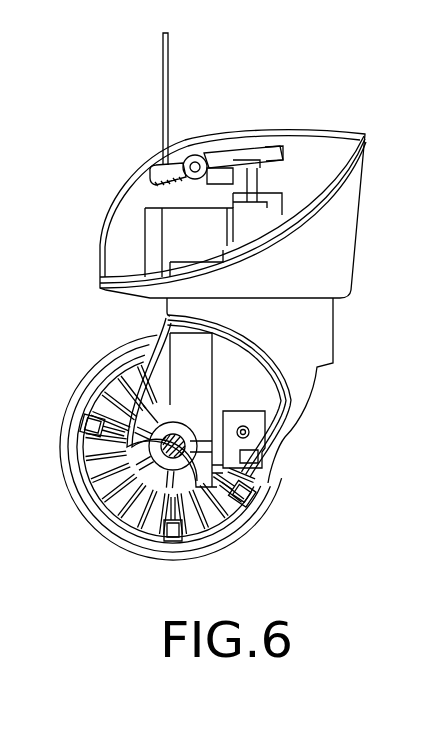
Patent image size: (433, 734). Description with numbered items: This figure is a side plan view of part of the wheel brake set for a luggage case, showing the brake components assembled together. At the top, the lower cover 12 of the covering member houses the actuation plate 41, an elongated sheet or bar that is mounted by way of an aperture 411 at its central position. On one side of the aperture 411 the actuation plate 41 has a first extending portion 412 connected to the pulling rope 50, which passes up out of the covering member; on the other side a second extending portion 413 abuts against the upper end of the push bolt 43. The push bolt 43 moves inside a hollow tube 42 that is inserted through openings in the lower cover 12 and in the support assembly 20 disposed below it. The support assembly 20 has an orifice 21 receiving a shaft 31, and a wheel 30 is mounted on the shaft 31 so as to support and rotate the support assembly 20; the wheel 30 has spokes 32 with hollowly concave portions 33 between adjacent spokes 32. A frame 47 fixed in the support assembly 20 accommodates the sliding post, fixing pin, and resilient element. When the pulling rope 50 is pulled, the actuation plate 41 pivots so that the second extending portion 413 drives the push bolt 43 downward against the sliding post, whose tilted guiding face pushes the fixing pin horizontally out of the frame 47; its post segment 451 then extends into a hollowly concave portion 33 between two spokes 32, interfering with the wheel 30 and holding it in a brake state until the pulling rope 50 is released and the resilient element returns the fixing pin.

The lower cover 12 is at (107, 247).
The support assembly 20 is at (315, 338).
The orifice 21 is at (178, 455).
The wheel 30 is at (267, 493).
The shaft 31 is at (163, 450).
The spokes 32 is at (115, 397).
The hollowly concave portion 33 is at (93, 393).
The actuation plate 41 is at (222, 147).
The aperture 411 is at (195, 163).
The first extending portion 412 is at (153, 170).
The second extending portion 413 is at (267, 147).
The hollow tube 42 is at (233, 207).
The push bolt 43 is at (253, 177).
The frame 47 is at (263, 417).
The post segment 451 is at (249, 432).
The pulling rope 50 is at (161, 60).